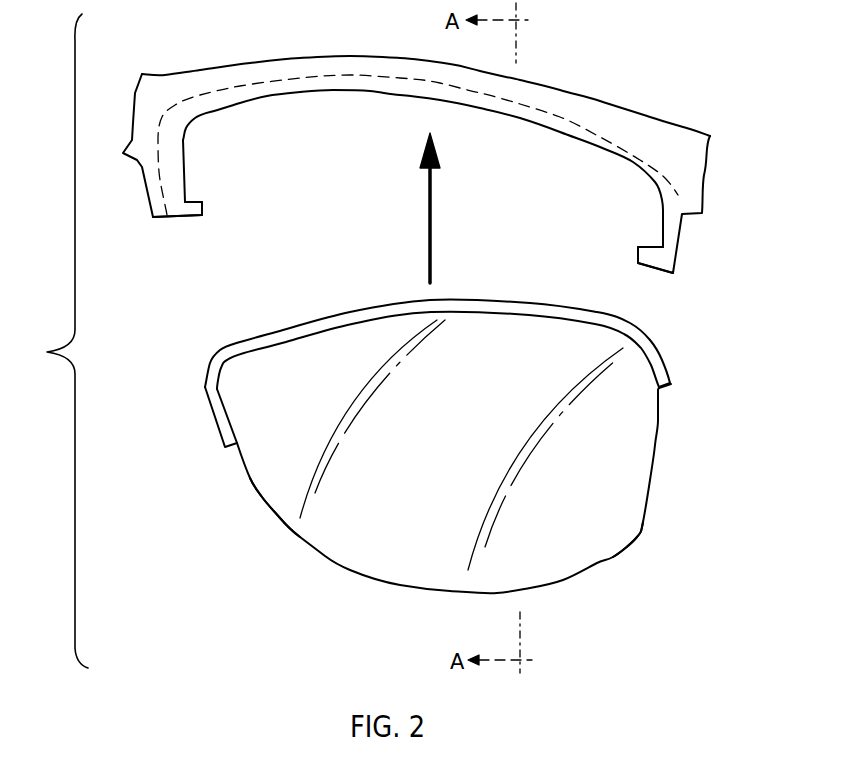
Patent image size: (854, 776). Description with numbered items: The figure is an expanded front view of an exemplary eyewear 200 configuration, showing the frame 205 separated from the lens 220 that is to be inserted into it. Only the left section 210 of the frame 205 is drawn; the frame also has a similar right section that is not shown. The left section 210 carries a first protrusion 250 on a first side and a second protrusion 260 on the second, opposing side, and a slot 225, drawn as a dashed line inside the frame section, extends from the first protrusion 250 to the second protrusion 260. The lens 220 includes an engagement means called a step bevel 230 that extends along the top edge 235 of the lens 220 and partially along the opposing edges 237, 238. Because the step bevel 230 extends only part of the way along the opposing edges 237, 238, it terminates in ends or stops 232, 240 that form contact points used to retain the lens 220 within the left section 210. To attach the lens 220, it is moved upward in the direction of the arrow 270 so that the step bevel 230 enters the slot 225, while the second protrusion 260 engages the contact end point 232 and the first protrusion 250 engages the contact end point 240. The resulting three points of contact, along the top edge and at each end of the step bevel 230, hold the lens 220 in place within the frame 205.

The eyewear 200 is at (54, 341).
The frame 205 is at (420, 164).
The left section 210 is at (582, 116).
The lens 220 is at (445, 449).
The slot 225 is at (383, 90).
The step bevel 230 is at (445, 392).
The contact end point 232 is at (228, 455).
The top edge 235 is at (341, 320).
The opposing edge 237 is at (262, 497).
The opposing edge 238 is at (643, 522).
The contact end point 240 is at (668, 388).
The first protrusion 250 is at (646, 254).
The second protrusion 260 is at (197, 207).
The arrow 270 is at (425, 210).